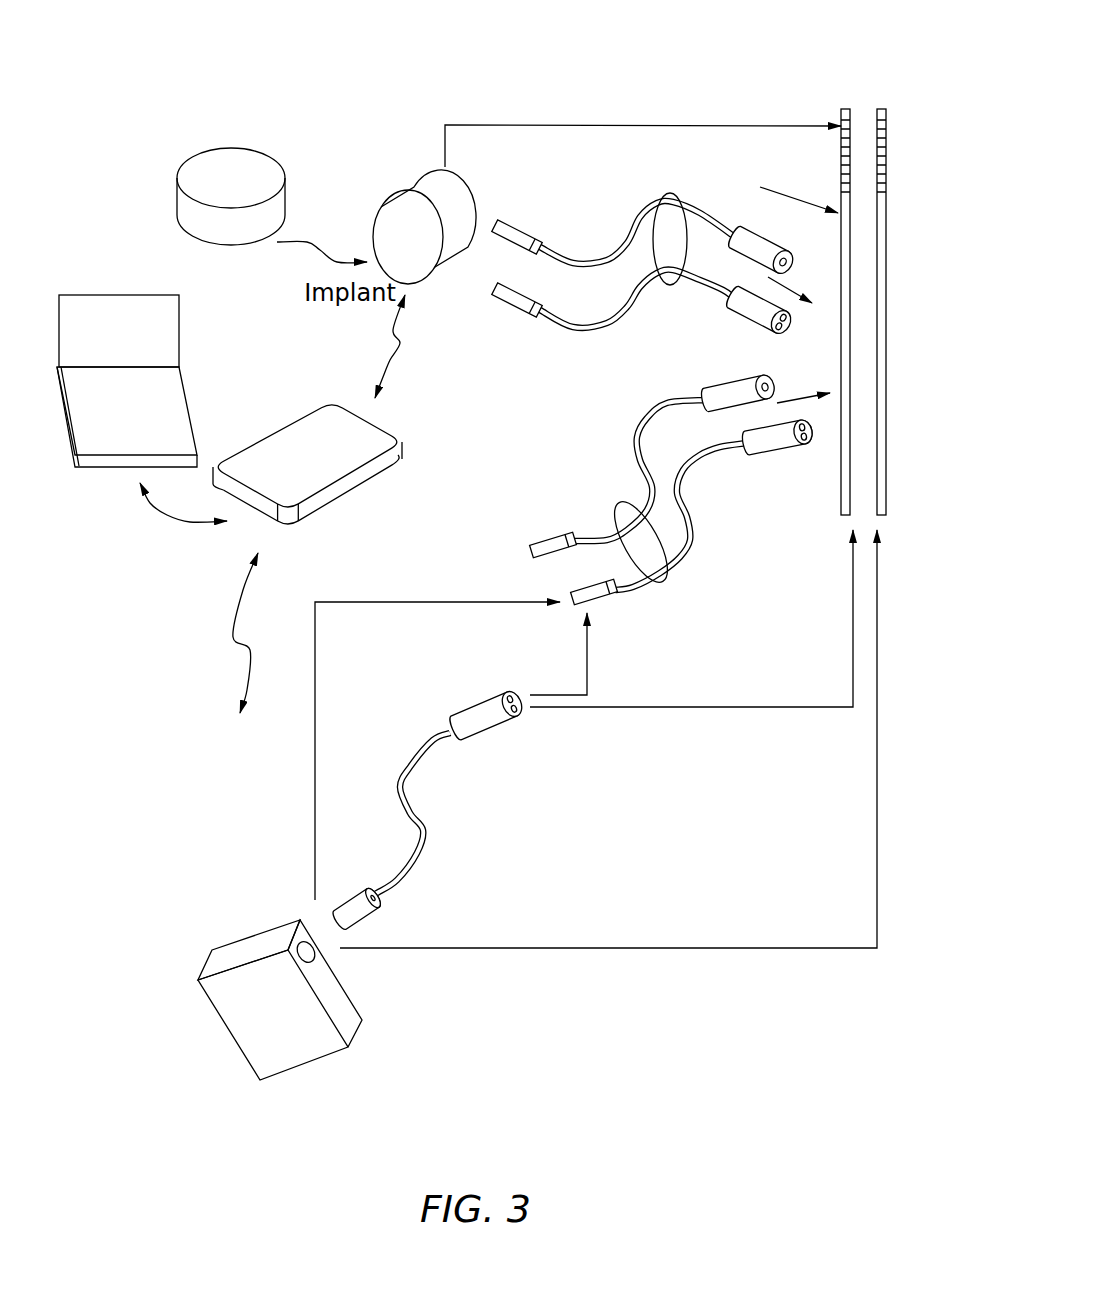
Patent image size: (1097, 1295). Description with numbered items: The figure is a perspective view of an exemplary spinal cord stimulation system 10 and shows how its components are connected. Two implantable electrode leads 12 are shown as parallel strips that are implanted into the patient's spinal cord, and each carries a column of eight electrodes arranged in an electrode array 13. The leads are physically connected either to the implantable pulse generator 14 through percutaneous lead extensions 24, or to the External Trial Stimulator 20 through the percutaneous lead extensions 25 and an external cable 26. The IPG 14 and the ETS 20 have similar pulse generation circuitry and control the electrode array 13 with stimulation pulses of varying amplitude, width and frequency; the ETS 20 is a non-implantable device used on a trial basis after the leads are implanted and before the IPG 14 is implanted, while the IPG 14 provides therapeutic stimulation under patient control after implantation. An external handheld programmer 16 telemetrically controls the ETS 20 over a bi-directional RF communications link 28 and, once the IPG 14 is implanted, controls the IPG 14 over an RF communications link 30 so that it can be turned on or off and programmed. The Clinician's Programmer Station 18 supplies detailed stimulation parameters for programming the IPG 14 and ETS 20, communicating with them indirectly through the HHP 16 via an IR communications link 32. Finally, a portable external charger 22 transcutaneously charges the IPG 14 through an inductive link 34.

The SCS system 10 is at (612, 68).
The implantable electrode leads 12 is at (862, 117).
The electrode array 13 is at (850, 157).
The implantable pulse generator 14 is at (403, 183).
The external handheld programmer 16 is at (322, 420).
The Clinician's Programmer Station 18 is at (92, 308).
The External Trial Stimulator 20 is at (250, 947).
The external charger 22 is at (232, 160).
The percutaneous lead extensions 24 is at (667, 196).
The percutaneous extension 25 is at (617, 507).
The external cable 26 is at (423, 745).
The bi-directional RF communications link 28 is at (250, 677).
The RF communications link 30 is at (412, 362).
The IR communications link 32 is at (163, 513).
The inductive link 34 is at (292, 250).